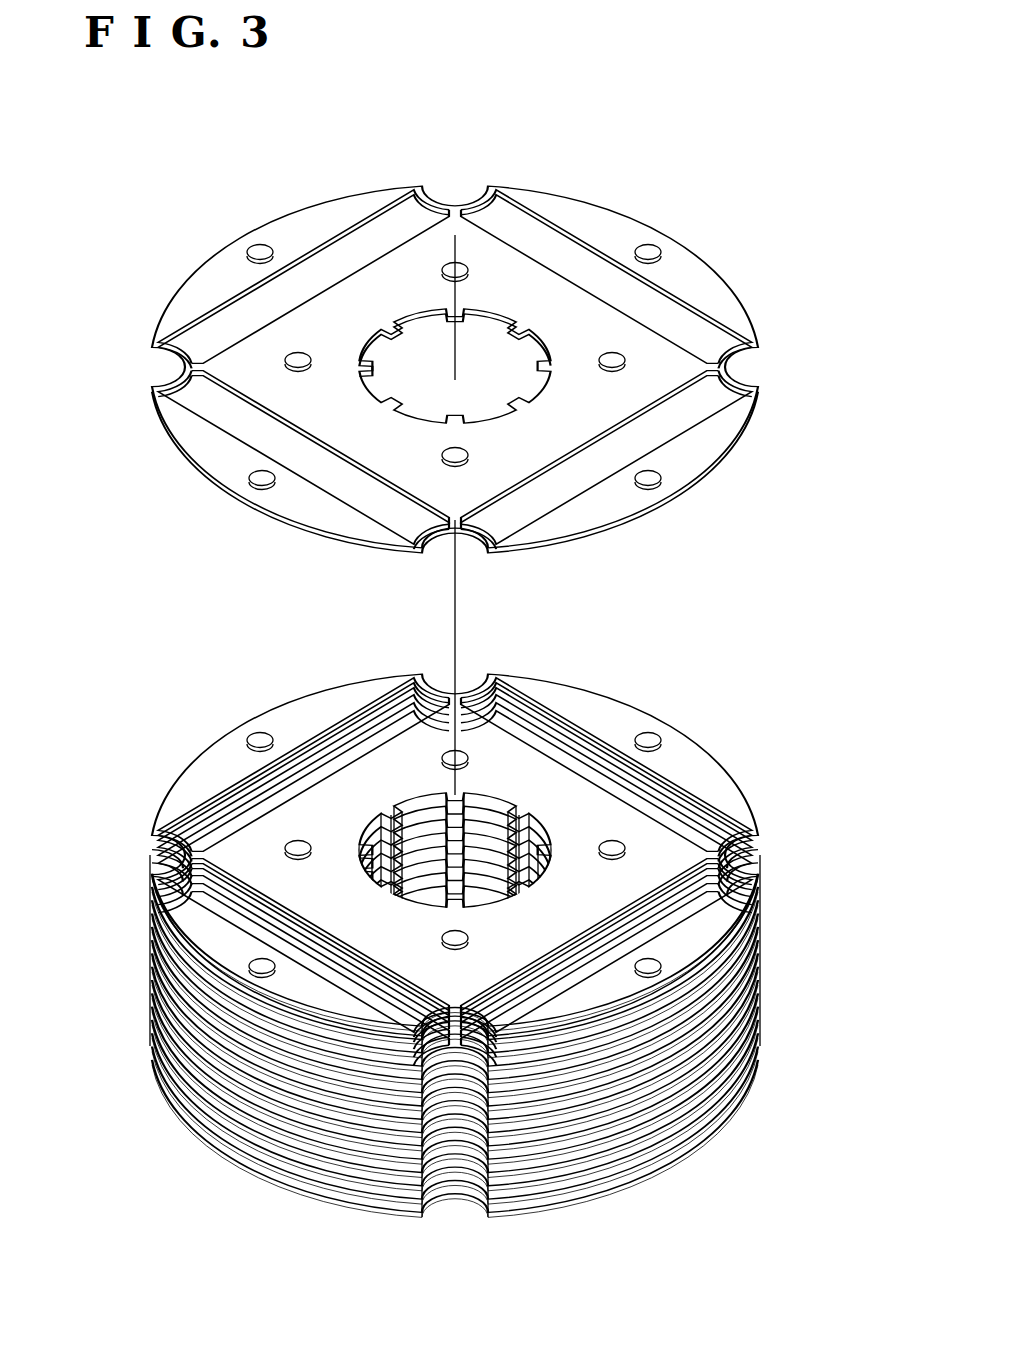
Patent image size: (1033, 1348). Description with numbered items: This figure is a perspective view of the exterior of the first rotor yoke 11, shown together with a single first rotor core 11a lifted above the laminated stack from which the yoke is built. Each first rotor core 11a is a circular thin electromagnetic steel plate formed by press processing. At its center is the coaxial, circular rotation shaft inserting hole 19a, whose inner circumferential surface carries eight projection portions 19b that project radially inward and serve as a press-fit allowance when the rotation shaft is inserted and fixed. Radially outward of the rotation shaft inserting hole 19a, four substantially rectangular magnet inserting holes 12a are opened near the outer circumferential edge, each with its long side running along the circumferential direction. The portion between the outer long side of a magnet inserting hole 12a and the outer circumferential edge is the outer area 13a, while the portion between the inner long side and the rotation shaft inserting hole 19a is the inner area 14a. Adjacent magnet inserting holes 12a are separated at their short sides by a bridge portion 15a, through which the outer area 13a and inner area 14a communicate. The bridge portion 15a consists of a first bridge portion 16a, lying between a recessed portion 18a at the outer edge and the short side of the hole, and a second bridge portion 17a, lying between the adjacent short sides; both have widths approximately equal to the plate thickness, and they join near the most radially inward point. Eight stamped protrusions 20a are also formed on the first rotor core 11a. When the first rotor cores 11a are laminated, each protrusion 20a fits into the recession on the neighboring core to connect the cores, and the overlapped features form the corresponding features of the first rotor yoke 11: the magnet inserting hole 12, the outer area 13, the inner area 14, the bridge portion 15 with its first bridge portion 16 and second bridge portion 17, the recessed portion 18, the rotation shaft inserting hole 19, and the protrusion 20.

The first rotor yoke 11 is at (188, 1142).
The first rotor core 11a is at (192, 232).
The magnet inserting hole 12 is at (240, 790).
The magnet inserting hole 12a is at (342, 250).
The outer area 13 is at (235, 790).
The outer area 13a is at (205, 285).
The inner area 14 is at (380, 770).
The inner area 14a is at (390, 268).
The bridge portion 15 is at (452, 636).
The bridge portion 15a is at (472, 128).
The first bridge portion 16 is at (445, 1015).
The first bridge portion 16a is at (503, 568).
The second bridge portion 17 is at (438, 1005).
The second bridge portion 17a is at (503, 598).
The recessed portion 18 is at (471, 690).
The recessed portion 18a is at (473, 191).
The rotation shaft inserting hole 19 is at (491, 814).
The rotation shaft inserting hole 19a is at (485, 352).
The projection portion 19b is at (375, 335).
The protrusion 20 is at (260, 728).
The protrusion 20a is at (260, 245).